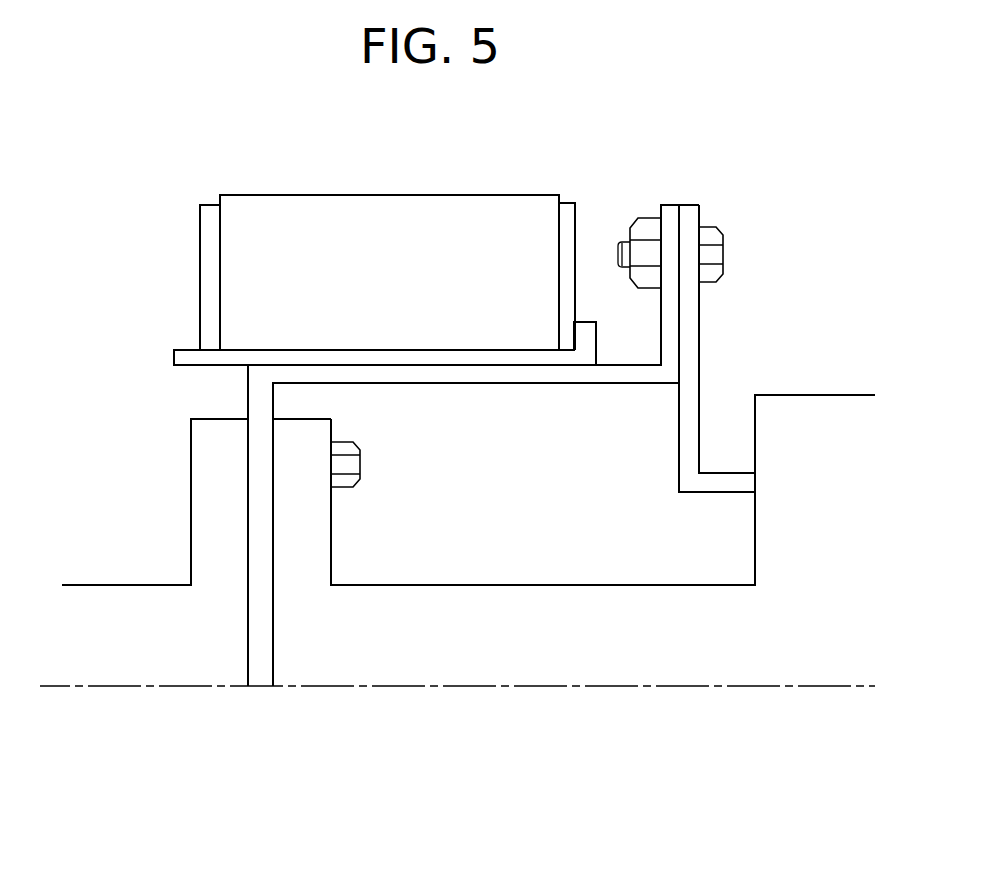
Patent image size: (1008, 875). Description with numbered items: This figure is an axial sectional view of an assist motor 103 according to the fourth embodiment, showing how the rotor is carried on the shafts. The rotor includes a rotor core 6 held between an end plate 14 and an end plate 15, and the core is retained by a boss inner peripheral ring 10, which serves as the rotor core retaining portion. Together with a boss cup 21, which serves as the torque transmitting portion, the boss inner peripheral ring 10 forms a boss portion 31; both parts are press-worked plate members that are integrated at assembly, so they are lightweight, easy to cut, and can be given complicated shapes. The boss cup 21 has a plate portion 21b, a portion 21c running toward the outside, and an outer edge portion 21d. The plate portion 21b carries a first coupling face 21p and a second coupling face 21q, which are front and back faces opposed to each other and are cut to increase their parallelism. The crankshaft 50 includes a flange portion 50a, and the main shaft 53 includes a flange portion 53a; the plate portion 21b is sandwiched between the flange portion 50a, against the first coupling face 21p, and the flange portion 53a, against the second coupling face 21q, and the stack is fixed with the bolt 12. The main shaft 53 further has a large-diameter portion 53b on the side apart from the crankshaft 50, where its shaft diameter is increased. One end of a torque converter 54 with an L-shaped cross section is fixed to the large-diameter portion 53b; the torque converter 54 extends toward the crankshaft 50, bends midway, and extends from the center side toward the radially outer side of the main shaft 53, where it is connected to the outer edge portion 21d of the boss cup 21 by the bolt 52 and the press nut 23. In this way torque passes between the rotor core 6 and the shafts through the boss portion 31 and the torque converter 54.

The assist motor 103 is at (457, 442).
The rotor core 6 is at (495, 208).
The end plate 14 is at (567, 215).
The end plate 15 is at (210, 242).
The boss portion 31 is at (98, 345).
The boss inner peripheral ring 10 is at (174, 358).
The boss cup 21 is at (248, 397).
The plate portion 21b is at (273, 403).
The horizontal portion of bracket 21c is at (513, 383).
The outer edge portion 21d is at (672, 205).
The first coupling face 21p is at (248, 660).
The second coupling face 21q is at (273, 660).
The press nut 23 is at (647, 227).
The bolt 52 is at (715, 255).
The torque converter 54 is at (693, 358).
The crankshaft 50 is at (112, 600).
The flange portion 50a is at (191, 458).
The main shaft 53 is at (612, 600).
The flange portion 53a is at (331, 522).
The large-diameter portion 53b is at (753, 533).
The bolt 12 is at (352, 465).